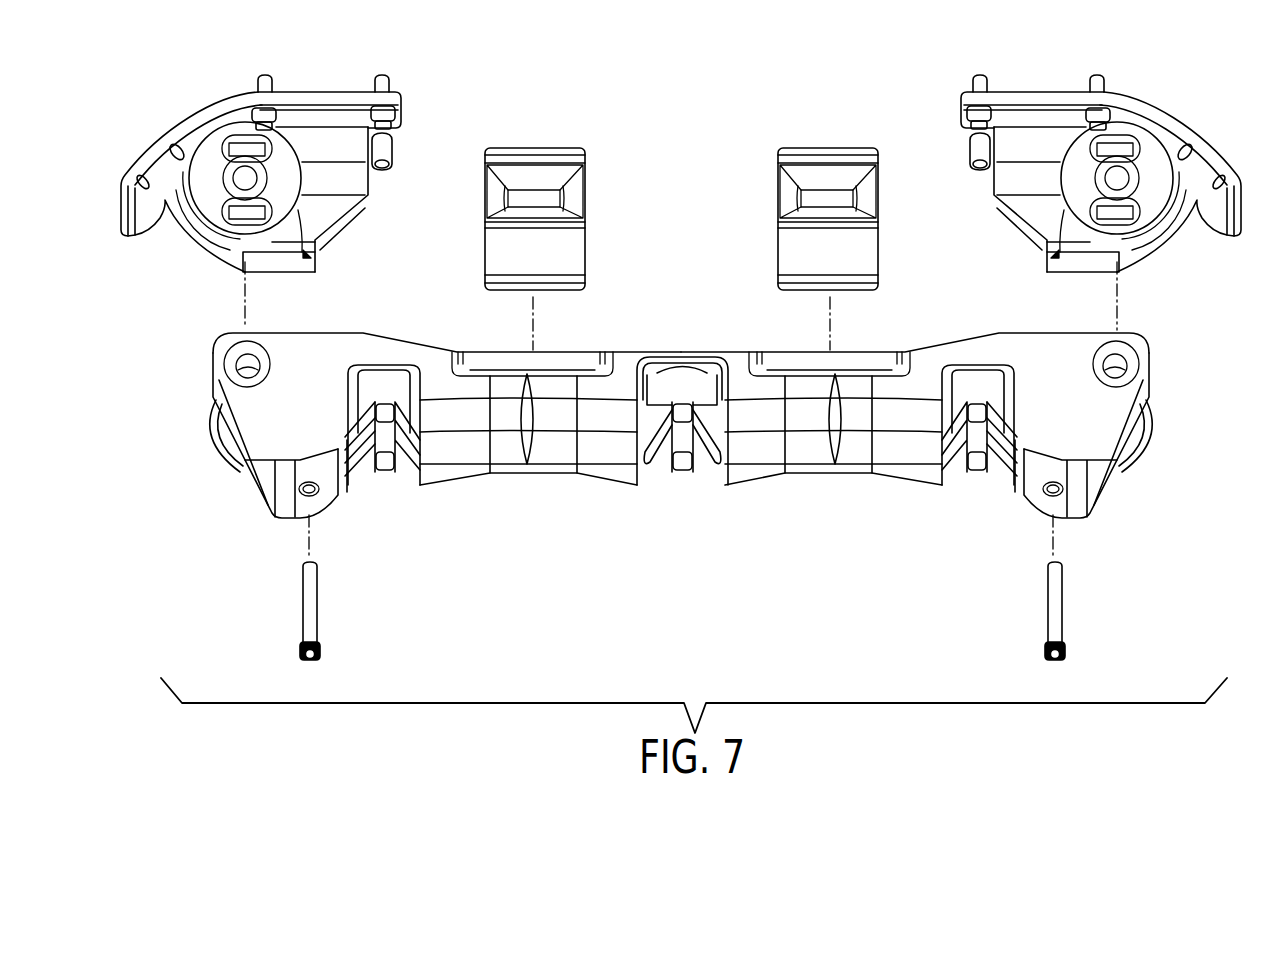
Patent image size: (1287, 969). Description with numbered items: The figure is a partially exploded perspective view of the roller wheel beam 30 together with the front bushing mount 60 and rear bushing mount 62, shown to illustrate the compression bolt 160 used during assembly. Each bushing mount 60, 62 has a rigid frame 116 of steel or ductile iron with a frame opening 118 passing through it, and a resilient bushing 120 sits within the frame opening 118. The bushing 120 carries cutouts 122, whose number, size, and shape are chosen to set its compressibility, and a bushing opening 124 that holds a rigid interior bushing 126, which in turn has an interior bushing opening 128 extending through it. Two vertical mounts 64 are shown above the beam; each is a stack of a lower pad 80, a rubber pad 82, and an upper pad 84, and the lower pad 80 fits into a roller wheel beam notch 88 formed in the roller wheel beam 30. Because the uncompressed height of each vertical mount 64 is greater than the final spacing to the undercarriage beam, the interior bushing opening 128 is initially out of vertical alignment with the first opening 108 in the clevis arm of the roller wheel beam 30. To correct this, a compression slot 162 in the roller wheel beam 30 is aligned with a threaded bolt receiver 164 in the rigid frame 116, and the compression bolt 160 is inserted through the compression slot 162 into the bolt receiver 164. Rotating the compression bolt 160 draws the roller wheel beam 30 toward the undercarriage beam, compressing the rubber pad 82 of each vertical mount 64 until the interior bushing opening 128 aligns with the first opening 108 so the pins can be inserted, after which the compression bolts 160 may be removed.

The roller wheel beam 30 is at (681, 434).
The front bushing mount 60 is at (1045, 94).
The rear bushing mount 62 is at (318, 92).
The vertical mount 64 is at (669, 228).
The lower pad 80 is at (588, 262).
The rubber pad 82 is at (587, 201).
The upper pad 84 is at (488, 188).
The roller wheel beam notch 88 is at (555, 352).
The first opening 108 is at (243, 363).
The frame 116 is at (333, 247).
The frame opening 118 is at (240, 183).
The bushing 120 is at (283, 203).
The cutouts 122 is at (230, 150).
The bushing opening 124 is at (223, 177).
The interior bushing 126 is at (225, 222).
The interior bushing opening 128 is at (240, 177).
The compression bolt 160 is at (317, 603).
The compression slot 162 is at (309, 496).
The bolt receiver 164 is at (308, 256).